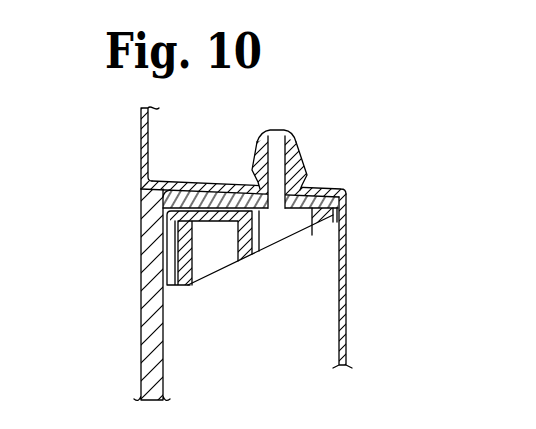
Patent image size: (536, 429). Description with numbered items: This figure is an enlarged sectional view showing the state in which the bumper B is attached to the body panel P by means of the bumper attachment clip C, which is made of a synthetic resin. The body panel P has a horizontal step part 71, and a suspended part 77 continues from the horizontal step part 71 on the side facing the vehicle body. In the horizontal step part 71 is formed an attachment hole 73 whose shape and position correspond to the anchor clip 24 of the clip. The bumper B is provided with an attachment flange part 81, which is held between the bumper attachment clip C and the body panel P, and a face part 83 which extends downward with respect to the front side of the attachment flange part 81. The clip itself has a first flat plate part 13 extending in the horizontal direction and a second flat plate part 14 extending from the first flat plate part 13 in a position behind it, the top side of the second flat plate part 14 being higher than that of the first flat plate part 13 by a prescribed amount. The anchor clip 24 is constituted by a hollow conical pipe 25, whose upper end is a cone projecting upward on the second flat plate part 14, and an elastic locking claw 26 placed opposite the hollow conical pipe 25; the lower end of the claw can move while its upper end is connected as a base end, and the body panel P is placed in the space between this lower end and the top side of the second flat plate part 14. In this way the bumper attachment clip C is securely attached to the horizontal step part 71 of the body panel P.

The body panel P is at (134, 144).
The horizontal step part 71 is at (189, 181).
The suspended part 77 is at (348, 294).
The bumper B is at (133, 343).
The face part 83 is at (153, 278).
The attachment flange part 81 is at (170, 196).
The first flat plate part 13 is at (214, 225).
The second flat plate part 14 is at (292, 200).
The bumper attachment clip C is at (262, 274).
The anchor clip 24 is at (317, 149).
The hollow conical pipe 25 is at (285, 133).
The elastic locking claw 26 is at (334, 163).
The attachment hole 73 is at (257, 177).